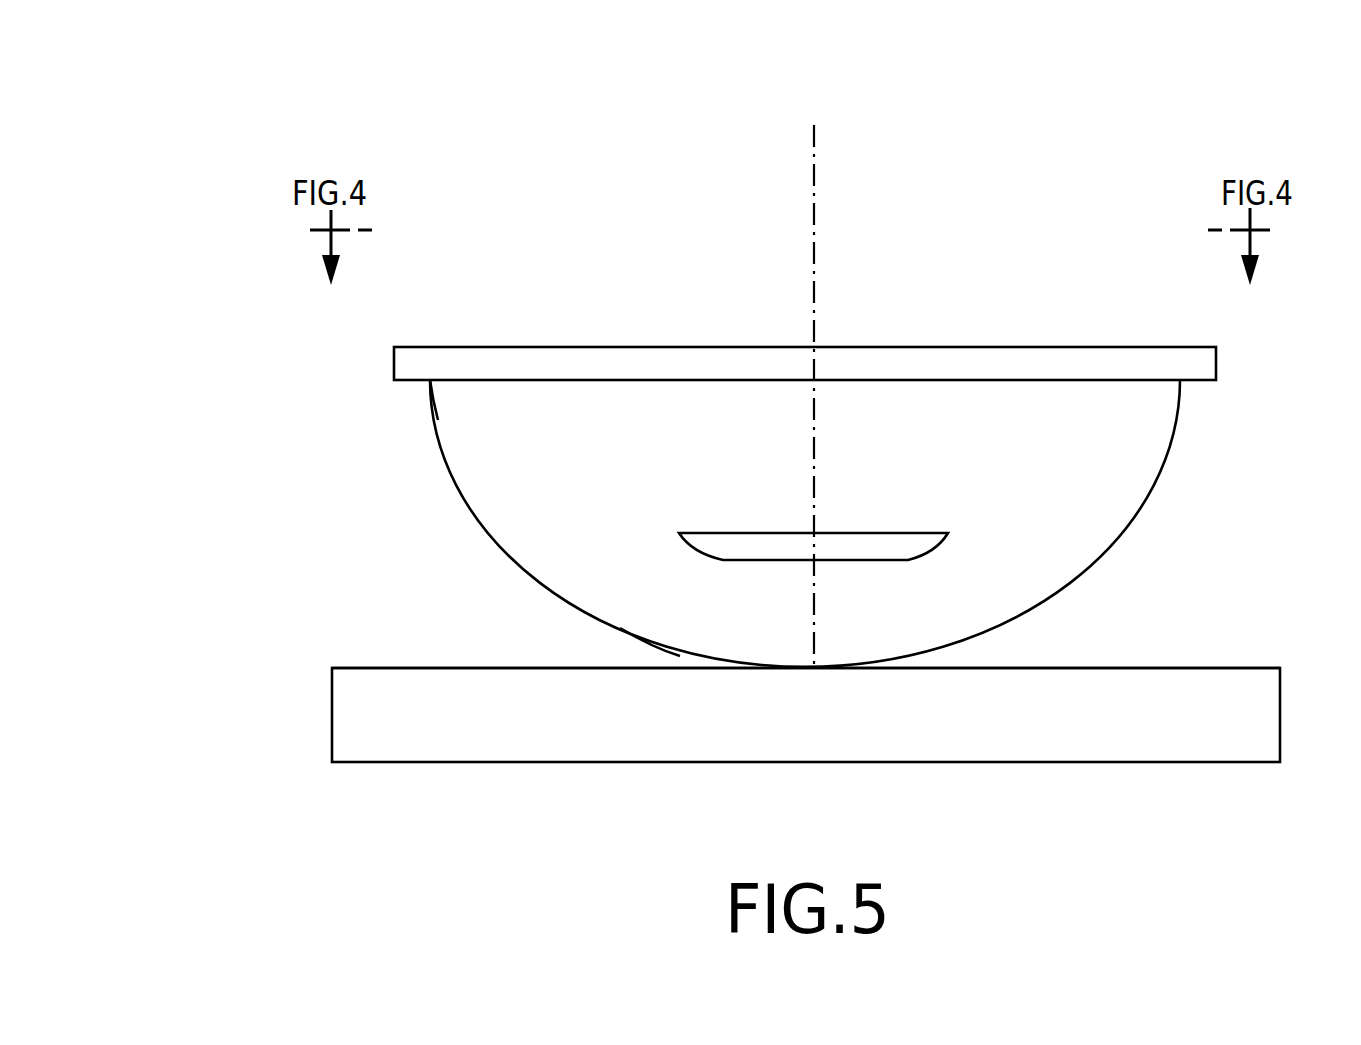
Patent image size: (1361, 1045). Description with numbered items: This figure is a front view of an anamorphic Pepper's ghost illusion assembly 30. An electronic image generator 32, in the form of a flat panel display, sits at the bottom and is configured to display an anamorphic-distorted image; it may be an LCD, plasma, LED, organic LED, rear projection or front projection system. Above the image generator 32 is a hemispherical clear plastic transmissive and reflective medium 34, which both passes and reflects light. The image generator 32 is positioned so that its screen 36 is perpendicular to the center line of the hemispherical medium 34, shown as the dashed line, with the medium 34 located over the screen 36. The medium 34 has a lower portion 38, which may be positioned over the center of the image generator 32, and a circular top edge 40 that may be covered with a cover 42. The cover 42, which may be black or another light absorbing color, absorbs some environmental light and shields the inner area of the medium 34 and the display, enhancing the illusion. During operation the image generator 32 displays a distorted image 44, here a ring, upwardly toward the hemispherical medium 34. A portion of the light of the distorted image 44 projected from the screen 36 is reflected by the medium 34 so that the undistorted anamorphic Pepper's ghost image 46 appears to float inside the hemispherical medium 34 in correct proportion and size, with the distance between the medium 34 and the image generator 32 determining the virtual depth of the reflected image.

The anamorphic Pepper's ghost illusion assembly 30 is at (222, 99).
The electronic image generator 32 is at (1280, 717).
The hemispherical transmissive and reflective medium 34 is at (1163, 462).
The screen 36 is at (1247, 668).
The lower portion 38 is at (635, 636).
The circular top edge 40 is at (430, 380).
The cover 42 is at (485, 347).
The distorted image 44 is at (1005, 646).
The undistorted anamorphic Pepper's ghost image 46 is at (923, 541).